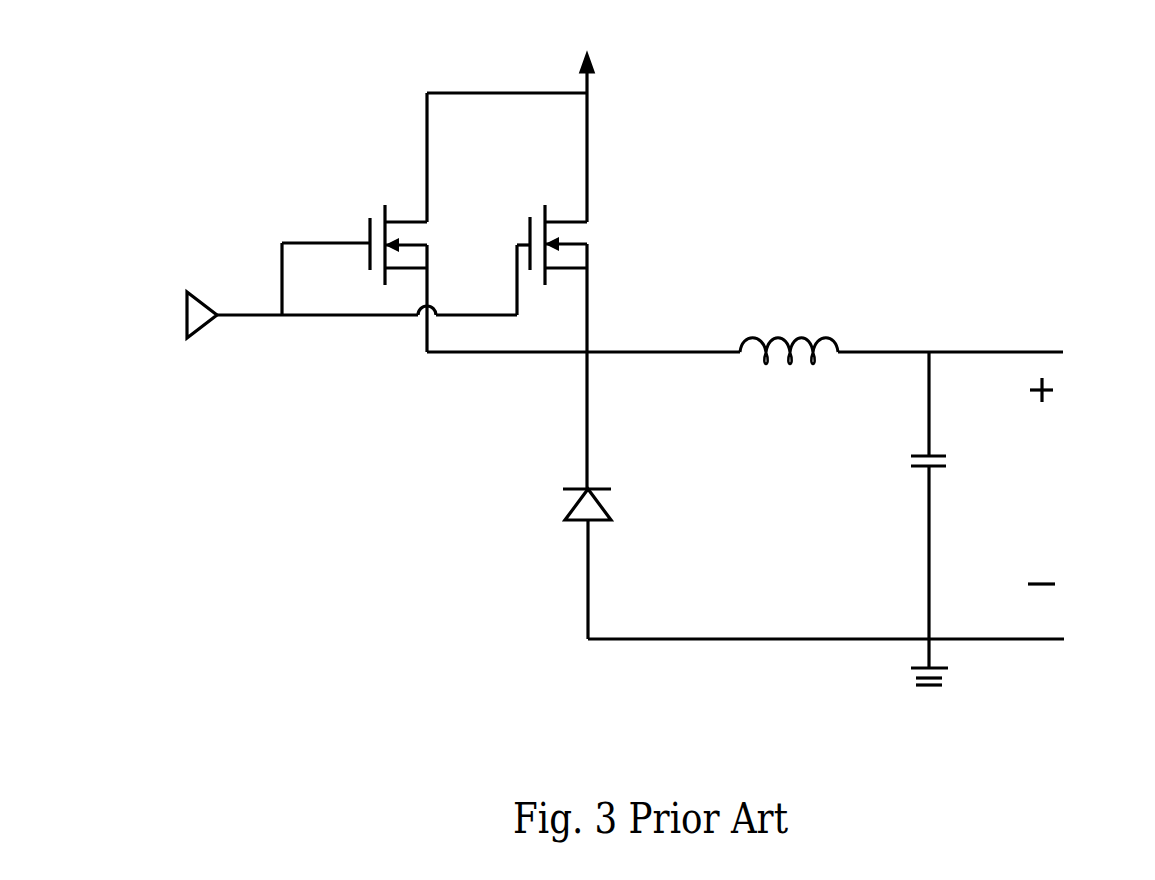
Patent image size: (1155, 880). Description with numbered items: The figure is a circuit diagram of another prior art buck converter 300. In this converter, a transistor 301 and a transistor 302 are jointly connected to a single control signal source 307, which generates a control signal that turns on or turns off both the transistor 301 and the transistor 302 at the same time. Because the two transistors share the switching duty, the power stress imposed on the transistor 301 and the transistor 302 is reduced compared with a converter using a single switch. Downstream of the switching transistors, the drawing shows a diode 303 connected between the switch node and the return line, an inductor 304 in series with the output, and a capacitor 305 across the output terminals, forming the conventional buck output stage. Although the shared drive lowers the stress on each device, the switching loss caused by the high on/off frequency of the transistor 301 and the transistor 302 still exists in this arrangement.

The buck converter 300 is at (1006, 178).
The transistor 301 is at (430, 237).
The transistor 302 is at (605, 247).
The diode 303 is at (600, 501).
The inductor 304 is at (789, 335).
The output capacitor 305 is at (950, 466).
The control signal source 307 is at (205, 330).